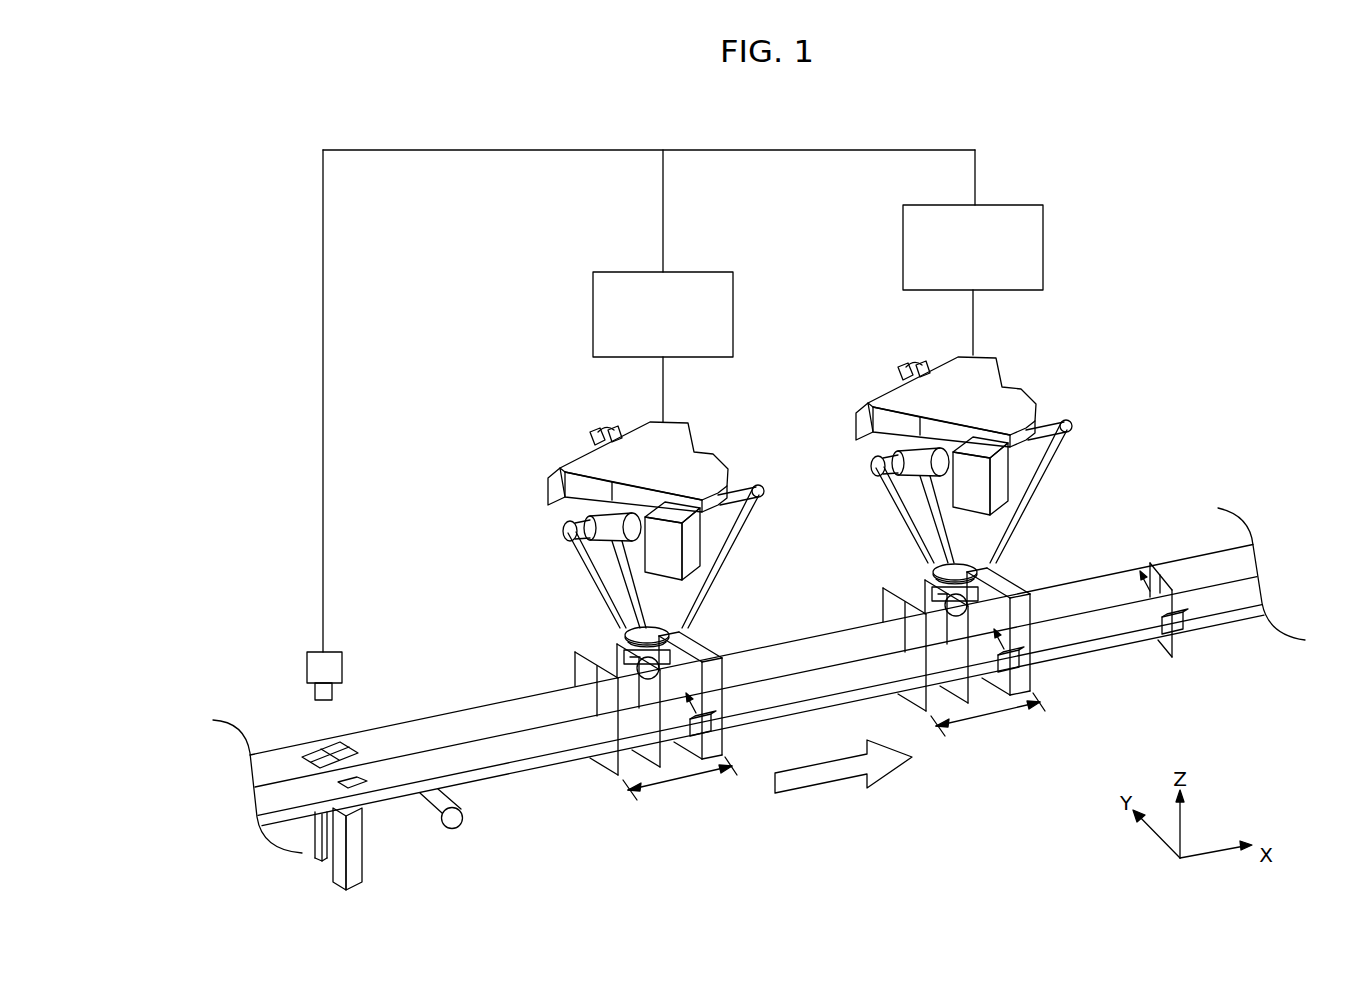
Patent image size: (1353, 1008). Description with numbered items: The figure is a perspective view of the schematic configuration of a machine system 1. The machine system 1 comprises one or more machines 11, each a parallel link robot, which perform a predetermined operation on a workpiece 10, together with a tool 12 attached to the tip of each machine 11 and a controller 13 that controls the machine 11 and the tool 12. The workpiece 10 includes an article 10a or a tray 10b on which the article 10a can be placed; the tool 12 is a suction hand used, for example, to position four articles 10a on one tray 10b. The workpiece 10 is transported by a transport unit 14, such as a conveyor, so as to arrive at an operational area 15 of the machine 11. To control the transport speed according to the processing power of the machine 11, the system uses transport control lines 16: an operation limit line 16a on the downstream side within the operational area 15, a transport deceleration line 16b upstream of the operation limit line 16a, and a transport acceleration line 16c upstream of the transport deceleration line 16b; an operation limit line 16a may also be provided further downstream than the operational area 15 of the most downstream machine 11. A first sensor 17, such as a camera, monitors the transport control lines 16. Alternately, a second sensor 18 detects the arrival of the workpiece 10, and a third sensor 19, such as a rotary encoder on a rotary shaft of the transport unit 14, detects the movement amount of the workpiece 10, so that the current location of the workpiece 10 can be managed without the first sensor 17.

The machine system 1 is at (1140, 170).
The workpiece 10 is at (283, 645).
The article 10a is at (332, 783).
The tray 10b is at (308, 742).
The machine 11 is at (672, 445).
The tool 12 is at (617, 624).
The controller 13 is at (697, 272).
The transport unit 14 is at (430, 735).
The operational area 15 is at (696, 785).
The transport control line 16 is at (715, 585).
The operation limit line 16a is at (685, 640).
The transport deceleration line 16b is at (698, 648).
The transport acceleration line 16c is at (700, 665).
The first sensor 17 is at (722, 731).
The second sensor 18 is at (330, 650).
The third sensor 19 is at (463, 828).